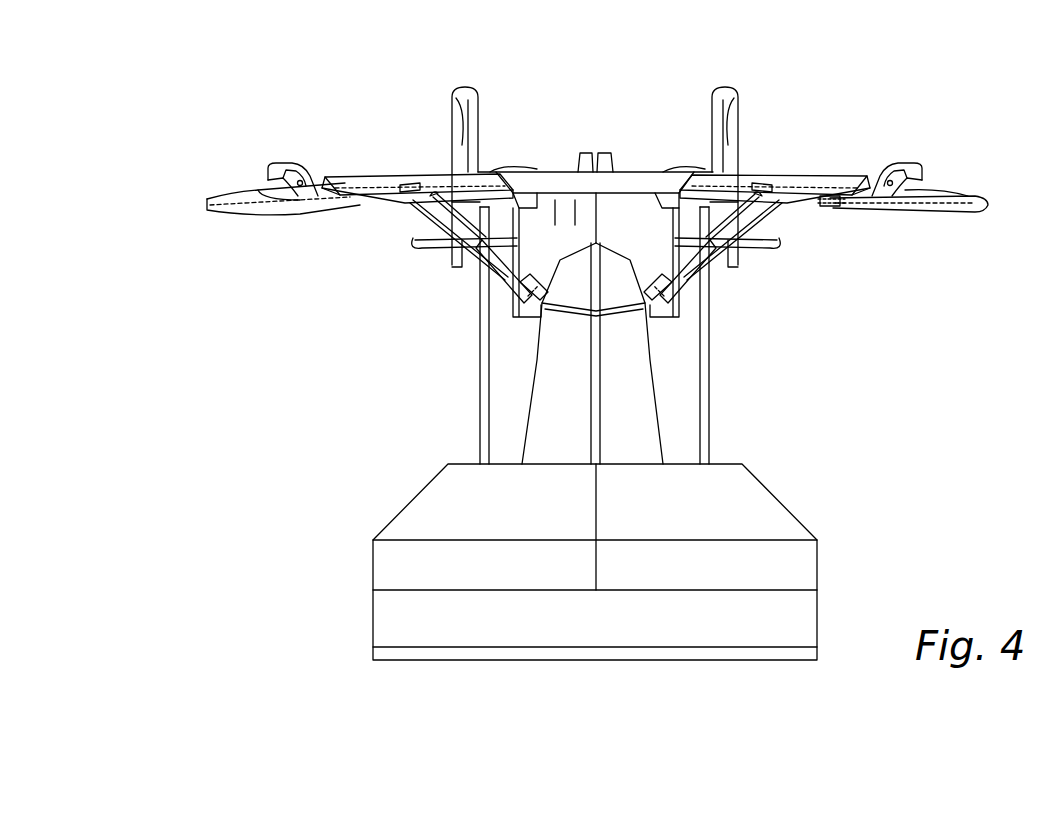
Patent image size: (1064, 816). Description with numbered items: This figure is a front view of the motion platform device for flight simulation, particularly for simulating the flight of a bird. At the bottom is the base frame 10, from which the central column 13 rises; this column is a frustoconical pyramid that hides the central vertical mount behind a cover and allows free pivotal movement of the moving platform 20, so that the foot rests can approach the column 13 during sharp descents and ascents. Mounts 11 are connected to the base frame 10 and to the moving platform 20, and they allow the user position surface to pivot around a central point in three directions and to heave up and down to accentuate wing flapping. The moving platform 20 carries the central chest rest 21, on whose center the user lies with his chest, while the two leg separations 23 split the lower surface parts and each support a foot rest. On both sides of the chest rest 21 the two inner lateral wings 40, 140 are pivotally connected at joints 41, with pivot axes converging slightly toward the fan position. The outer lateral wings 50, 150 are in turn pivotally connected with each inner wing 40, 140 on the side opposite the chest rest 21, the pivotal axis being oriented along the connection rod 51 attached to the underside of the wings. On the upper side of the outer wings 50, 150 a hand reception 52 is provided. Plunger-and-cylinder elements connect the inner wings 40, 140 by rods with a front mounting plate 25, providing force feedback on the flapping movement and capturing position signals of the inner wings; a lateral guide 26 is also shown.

The base frame 10 is at (388, 572).
The mount 11 is at (480, 403).
The central column 13 is at (640, 443).
The moving platform 20 is at (622, 182).
The chest rest 21 is at (537, 172).
The leg separation 23 is at (603, 156).
The front mounting plate 25 is at (573, 218).
The lateral guide 26 is at (730, 146).
The inner lateral wing 40 is at (808, 177).
The joint 41 is at (687, 180).
The outer lateral wing 50 is at (950, 197).
The connection rod 51 is at (827, 197).
The hand reception 52 is at (907, 168).
The inner lateral wing 140 is at (390, 177).
The outer lateral wing 150 is at (232, 193).